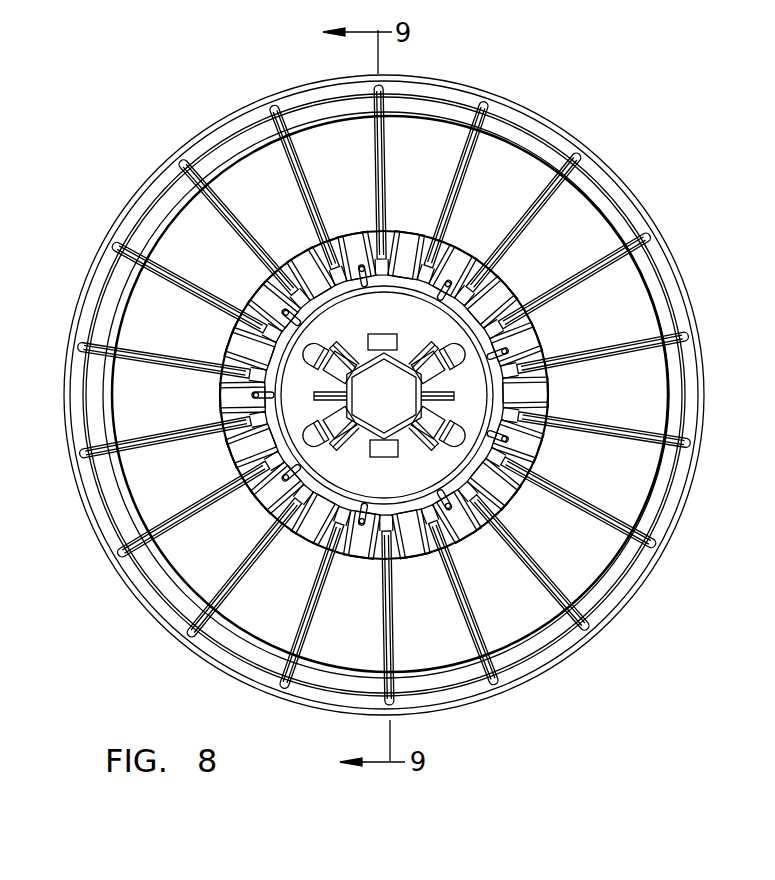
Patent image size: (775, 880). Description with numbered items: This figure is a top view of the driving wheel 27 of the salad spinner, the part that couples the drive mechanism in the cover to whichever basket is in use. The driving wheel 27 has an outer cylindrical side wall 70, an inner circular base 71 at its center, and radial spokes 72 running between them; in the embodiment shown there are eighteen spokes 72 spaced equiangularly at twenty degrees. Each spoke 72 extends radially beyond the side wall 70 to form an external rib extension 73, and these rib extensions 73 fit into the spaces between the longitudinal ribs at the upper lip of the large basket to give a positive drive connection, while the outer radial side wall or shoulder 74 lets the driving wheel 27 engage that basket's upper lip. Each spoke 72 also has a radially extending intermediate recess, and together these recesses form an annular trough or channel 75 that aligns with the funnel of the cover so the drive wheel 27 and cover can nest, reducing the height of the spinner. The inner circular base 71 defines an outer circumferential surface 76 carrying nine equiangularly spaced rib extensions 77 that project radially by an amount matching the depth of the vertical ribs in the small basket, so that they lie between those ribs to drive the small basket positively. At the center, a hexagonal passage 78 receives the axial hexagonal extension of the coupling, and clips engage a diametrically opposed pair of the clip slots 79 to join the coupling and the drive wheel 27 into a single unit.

The driving wheel 27 is at (548, 101).
The outer cylindrical side wall 70 is at (673, 258).
The inner circular base 71 is at (348, 470).
The radial spokes 72 is at (593, 262).
The external rib extension 73 is at (697, 336).
The outer radial side wall or shoulder 74 is at (672, 512).
The annular trough or channel 75 is at (523, 176).
The outer circumferential surface 76 is at (548, 398).
The rib extensions 77 is at (543, 438).
The hexagonal passage 78 is at (370, 403).
The clip slots 79 is at (368, 336).